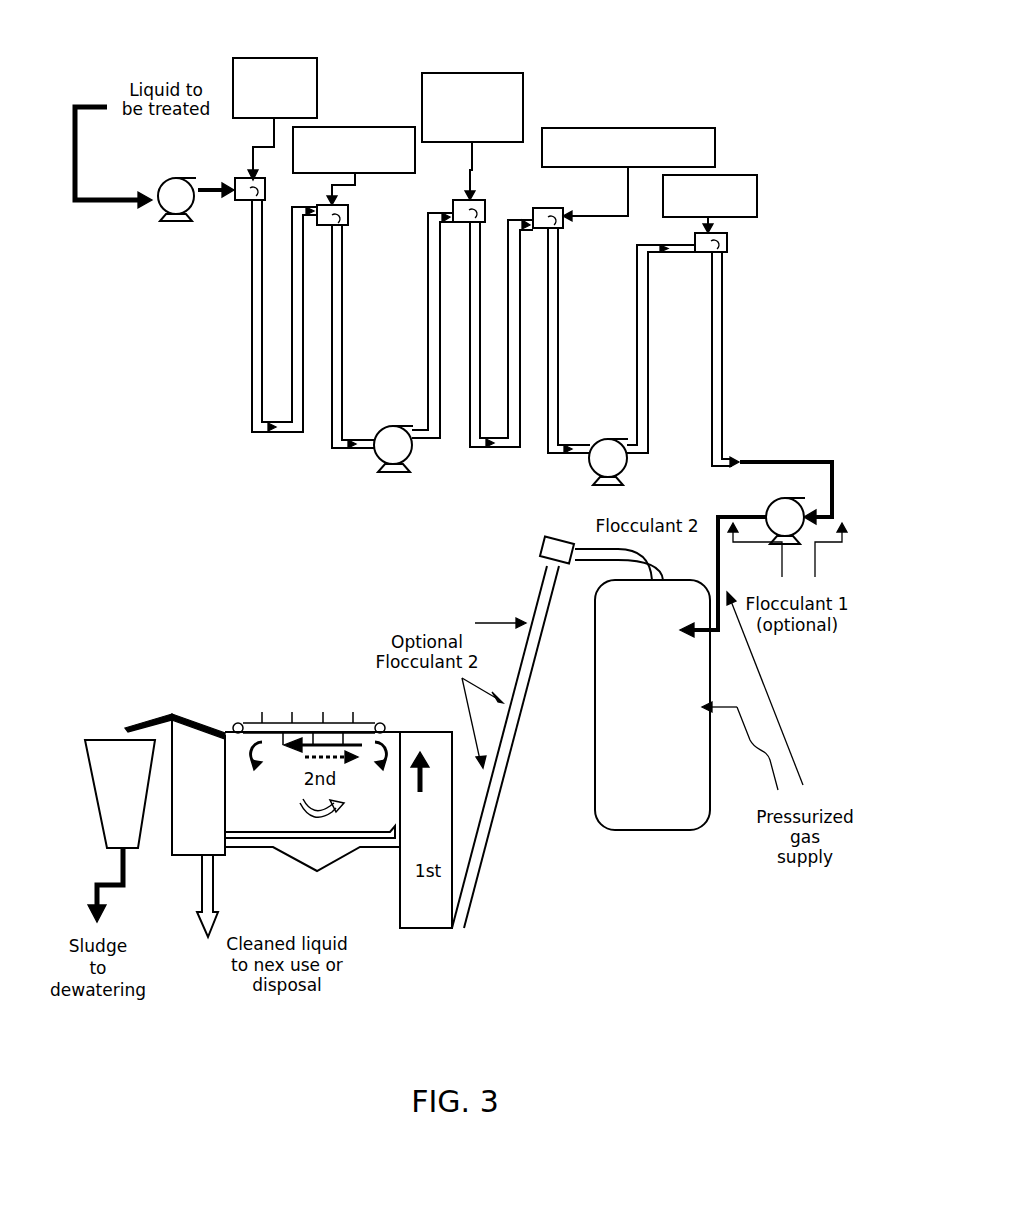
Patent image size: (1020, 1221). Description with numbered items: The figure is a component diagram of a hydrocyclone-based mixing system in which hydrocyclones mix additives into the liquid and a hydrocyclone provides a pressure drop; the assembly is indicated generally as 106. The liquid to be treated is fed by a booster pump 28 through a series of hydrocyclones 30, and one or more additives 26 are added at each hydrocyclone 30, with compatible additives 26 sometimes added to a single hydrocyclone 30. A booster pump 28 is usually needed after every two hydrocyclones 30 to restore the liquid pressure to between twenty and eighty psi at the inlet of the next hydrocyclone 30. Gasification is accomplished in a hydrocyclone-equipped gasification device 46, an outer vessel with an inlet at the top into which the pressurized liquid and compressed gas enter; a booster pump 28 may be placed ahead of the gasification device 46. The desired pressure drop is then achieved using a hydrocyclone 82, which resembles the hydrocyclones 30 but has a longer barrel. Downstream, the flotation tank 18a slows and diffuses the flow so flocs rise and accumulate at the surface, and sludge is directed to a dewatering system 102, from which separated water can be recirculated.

The additives 26 is at (260, 58).
The booster pump 28 is at (160, 183).
The hydrocyclones 30 is at (545, 550).
The liquid treatment system 106 is at (776, 225).
The gasification device 46 is at (642, 689).
The hydrocyclone 82 is at (507, 740).
The flotation tank 18a is at (262, 710).
The dewatering system 102 is at (90, 796).